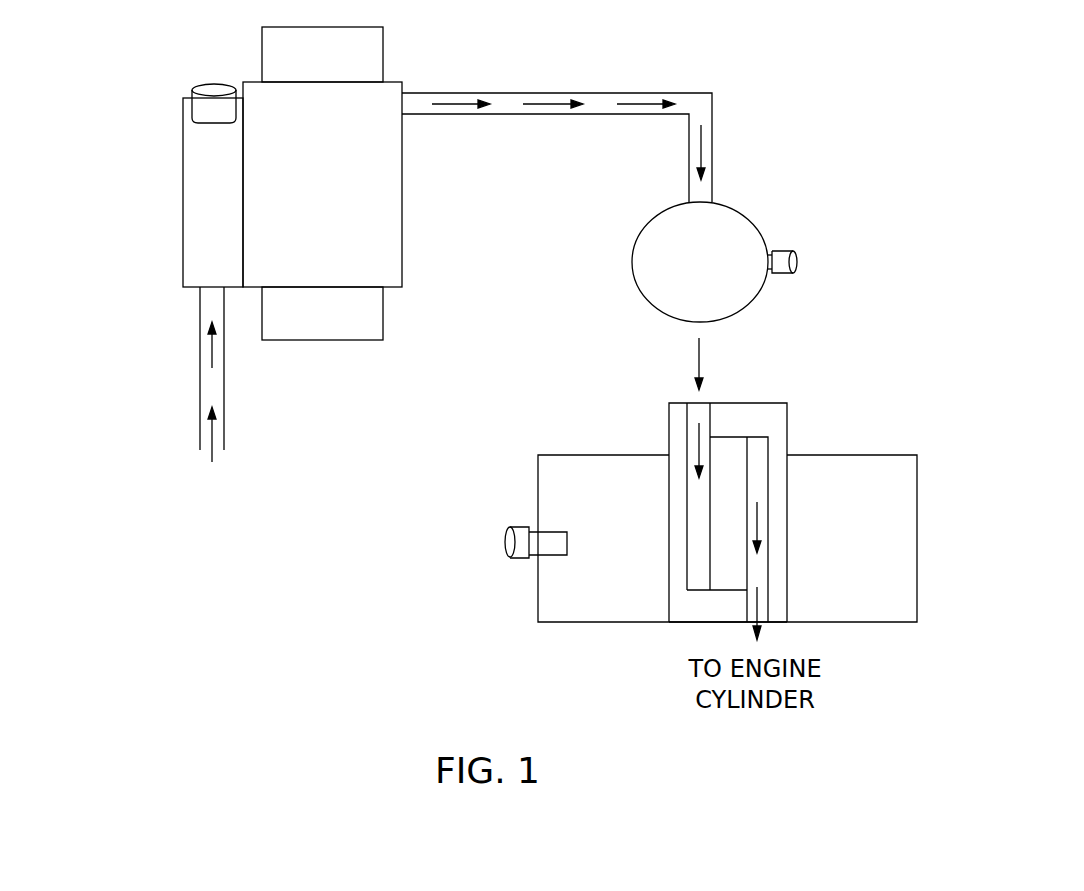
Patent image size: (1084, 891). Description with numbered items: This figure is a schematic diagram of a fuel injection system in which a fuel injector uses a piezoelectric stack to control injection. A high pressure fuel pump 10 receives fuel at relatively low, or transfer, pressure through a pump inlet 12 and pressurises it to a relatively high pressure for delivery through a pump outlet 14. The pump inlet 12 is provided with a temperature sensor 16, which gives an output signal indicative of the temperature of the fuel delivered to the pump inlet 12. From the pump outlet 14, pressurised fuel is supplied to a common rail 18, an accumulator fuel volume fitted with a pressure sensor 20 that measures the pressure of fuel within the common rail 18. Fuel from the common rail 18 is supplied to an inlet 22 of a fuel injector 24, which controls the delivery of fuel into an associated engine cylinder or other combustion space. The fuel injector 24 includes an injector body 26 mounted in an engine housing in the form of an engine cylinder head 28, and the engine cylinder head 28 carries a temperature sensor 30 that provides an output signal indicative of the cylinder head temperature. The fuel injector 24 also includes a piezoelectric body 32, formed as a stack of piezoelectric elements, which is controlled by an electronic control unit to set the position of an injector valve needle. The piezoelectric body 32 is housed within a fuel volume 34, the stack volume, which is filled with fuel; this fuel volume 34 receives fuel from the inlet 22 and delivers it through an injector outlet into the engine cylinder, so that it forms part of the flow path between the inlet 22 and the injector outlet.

The high pressure fuel pump 10 is at (339, 199).
The pump inlet 12 is at (208, 387).
The pump outlet 14 is at (402, 97).
The temperature sensor 16 is at (209, 88).
The common rail 18 is at (657, 233).
The pressure sensor 20 is at (797, 262).
The inlet 22 is at (692, 403).
The fuel injector 24 is at (822, 432).
The injector body 26 is at (687, 605).
The engine cylinder head 28 is at (558, 597).
The temperature sensor 30 is at (507, 545).
The piezoelectric body 32 is at (730, 447).
The fuel volume 34 is at (755, 567).